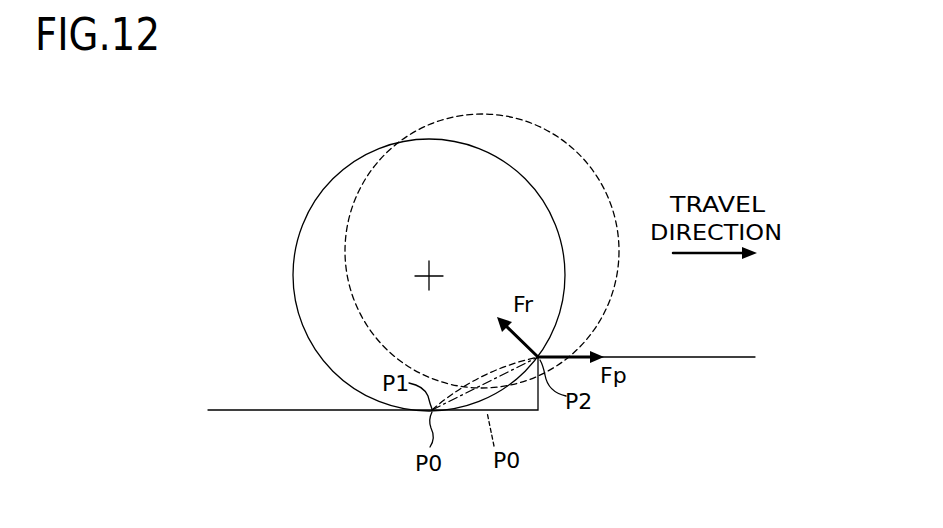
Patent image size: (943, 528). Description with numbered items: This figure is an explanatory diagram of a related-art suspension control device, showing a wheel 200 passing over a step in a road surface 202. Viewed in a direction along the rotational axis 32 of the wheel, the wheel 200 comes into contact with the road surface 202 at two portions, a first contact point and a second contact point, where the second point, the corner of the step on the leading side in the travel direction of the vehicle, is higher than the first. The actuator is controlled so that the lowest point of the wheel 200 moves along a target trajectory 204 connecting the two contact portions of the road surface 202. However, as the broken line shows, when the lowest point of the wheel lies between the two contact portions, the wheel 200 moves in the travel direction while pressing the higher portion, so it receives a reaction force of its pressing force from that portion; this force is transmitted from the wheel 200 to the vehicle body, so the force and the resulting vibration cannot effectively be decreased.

The wheel 200 is at (330, 183).
The rotational axis 32 is at (431, 273).
The road surface 202 is at (268, 409).
The target trajectory 204 is at (503, 367).